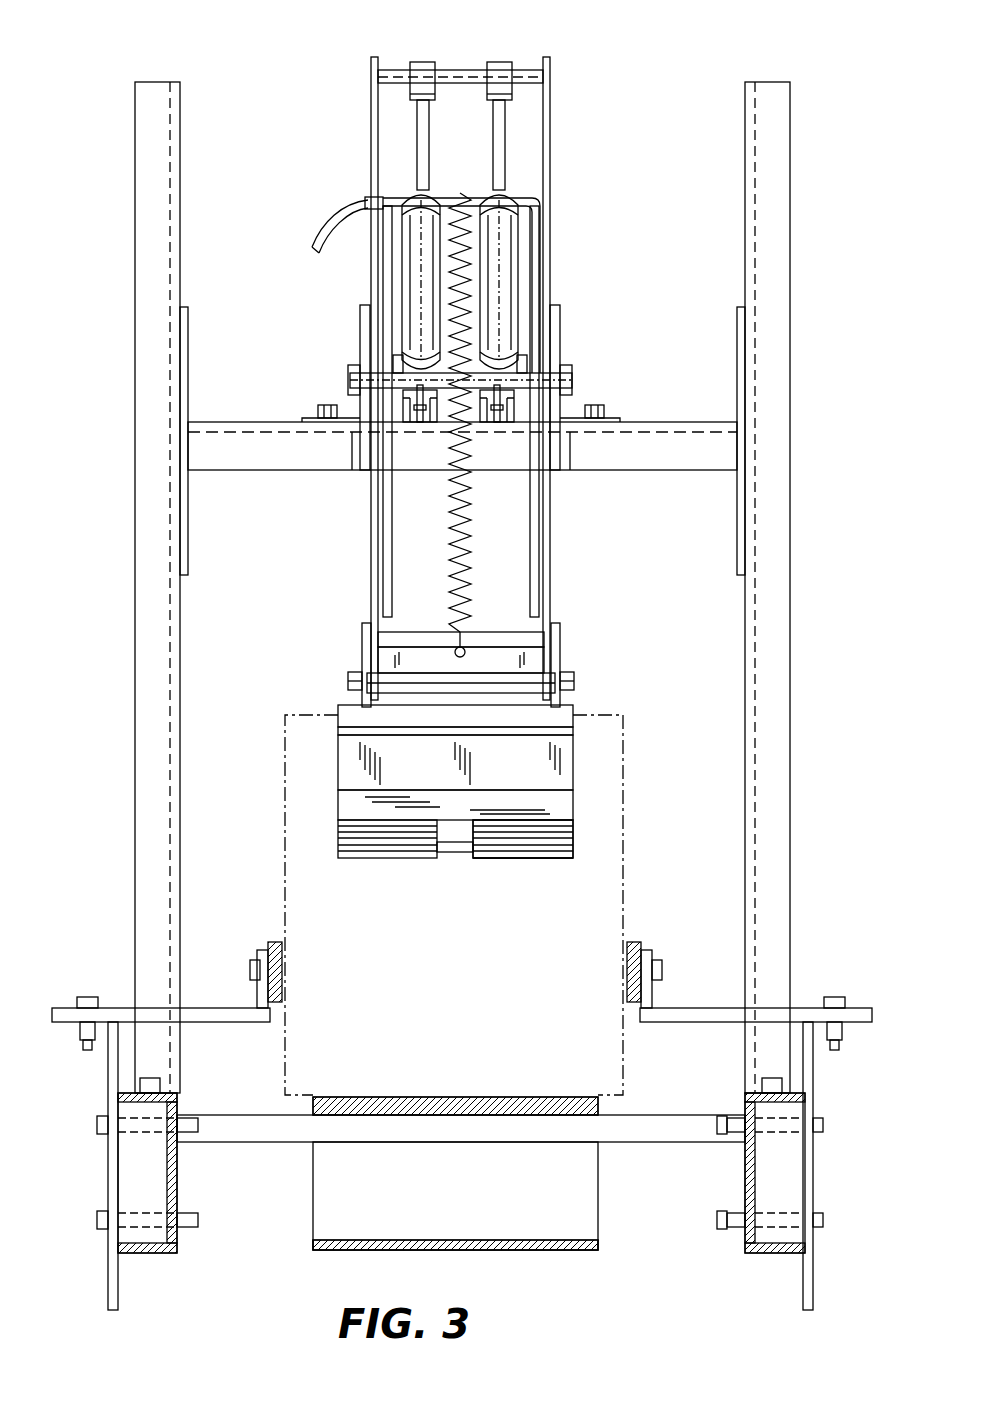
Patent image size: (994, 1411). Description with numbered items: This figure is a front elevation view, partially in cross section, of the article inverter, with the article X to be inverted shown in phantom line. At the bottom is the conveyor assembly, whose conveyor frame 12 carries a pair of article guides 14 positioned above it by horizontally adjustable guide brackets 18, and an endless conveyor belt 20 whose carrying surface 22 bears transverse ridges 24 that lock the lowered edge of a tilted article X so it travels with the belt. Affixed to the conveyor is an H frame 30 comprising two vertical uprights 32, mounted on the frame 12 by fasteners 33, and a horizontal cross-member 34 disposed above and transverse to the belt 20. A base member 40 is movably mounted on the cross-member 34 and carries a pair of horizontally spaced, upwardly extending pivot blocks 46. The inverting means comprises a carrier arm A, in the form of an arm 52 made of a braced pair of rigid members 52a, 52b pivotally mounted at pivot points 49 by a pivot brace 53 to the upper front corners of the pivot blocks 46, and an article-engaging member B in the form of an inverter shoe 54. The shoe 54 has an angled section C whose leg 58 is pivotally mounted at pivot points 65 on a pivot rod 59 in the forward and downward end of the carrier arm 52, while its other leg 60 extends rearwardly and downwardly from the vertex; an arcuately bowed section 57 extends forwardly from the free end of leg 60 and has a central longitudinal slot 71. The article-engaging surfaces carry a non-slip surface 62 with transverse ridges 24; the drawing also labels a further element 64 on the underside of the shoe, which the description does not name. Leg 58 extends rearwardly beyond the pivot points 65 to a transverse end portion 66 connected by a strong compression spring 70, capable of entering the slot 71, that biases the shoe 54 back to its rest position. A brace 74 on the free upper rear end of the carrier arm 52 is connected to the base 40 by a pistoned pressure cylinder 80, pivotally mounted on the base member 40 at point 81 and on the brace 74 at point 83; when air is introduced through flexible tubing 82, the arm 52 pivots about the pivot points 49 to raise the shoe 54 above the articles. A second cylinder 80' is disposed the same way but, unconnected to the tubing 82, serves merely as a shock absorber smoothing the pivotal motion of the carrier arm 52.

The conveyor frame 12 is at (460, 198).
The article guides 14 is at (275, 942).
The guide brackets 18 is at (232, 1022).
The conveyor belt 20 is at (598, 1182).
The carrying surface 22 is at (498, 1100).
The ridges 24 is at (548, 1100).
The H frame 30 is at (207, 495).
The uprights 32 is at (135, 652).
The fasteners 33 is at (195, 1125).
The cross-member 34 is at (265, 458).
The base member 40 is at (302, 418).
The pivot blocks 46 is at (360, 312).
The pivot points 49 is at (393, 362).
The carrier arm 52 is at (371, 588).
The rigid member 52a is at (371, 158).
The rigid member 52b is at (550, 172).
The pivot brace 53 is at (348, 380).
The inverter shoe 54 is at (338, 730).
The arcuately bowed section 57 is at (573, 808).
The leg 58 is at (405, 662).
The pivot rod 59 is at (480, 690).
The leg 60 is at (565, 775).
The non-slip surface 62 is at (575, 858).
The pad 64 is at (520, 850).
The pivot points 65 is at (362, 675).
The end portion 66 is at (500, 640).
The compression spring 70 is at (466, 522).
The slot 71 is at (448, 852).
The brace 74 is at (383, 70).
The pressure cylinder 80 is at (380, 234).
The pressure cylinder 80' is at (547, 234).
The pivot point 81 is at (420, 423).
The flexible tubing 82 is at (312, 247).
The pivot point 83 is at (497, 65).
The carrier arm A is at (578, 832).
The article-engaging member B is at (602, 742).
The angled section C is at (575, 712).
The article X is at (623, 890).